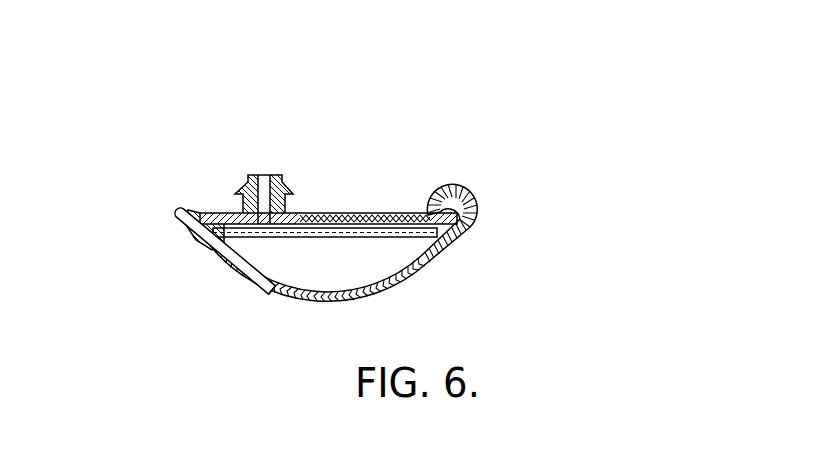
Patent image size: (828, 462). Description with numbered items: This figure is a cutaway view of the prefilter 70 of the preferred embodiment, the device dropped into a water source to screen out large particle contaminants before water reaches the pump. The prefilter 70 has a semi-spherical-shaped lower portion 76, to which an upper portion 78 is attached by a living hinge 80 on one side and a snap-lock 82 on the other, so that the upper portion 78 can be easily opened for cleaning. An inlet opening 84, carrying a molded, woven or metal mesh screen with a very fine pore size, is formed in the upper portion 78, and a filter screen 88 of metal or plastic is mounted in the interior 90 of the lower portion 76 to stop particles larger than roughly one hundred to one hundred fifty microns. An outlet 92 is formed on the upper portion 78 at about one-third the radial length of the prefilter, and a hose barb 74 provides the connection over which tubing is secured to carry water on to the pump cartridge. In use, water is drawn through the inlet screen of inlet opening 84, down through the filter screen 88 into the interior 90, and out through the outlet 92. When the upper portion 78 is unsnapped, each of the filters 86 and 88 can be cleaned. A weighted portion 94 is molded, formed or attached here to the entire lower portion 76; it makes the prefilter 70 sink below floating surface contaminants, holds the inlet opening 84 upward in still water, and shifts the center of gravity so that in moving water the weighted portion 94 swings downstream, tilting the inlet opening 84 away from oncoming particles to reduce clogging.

The prefilter 70 is at (492, 258).
The hose barb 74 is at (284, 174).
The lower portion 76 is at (271, 289).
The upper portion 78 is at (223, 212).
The living hinge 80 is at (462, 186).
The snap-lock 82 is at (188, 209).
The inlet opening 84 is at (370, 213).
The filter 86 is at (212, 243).
The filter screen 88 is at (383, 237).
The interior 90 is at (320, 255).
The outlet 92 is at (260, 173).
The weighted portion 94 is at (433, 270).